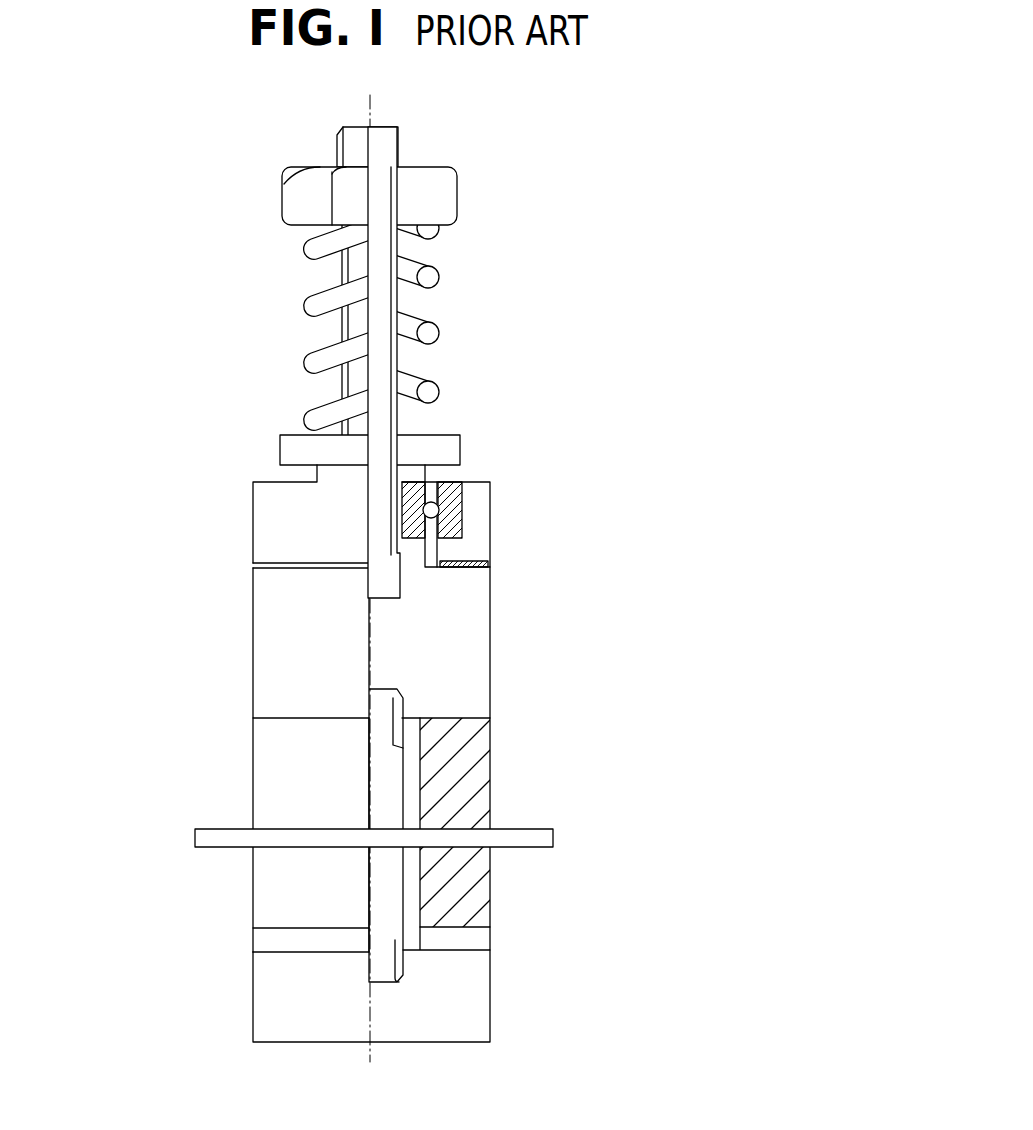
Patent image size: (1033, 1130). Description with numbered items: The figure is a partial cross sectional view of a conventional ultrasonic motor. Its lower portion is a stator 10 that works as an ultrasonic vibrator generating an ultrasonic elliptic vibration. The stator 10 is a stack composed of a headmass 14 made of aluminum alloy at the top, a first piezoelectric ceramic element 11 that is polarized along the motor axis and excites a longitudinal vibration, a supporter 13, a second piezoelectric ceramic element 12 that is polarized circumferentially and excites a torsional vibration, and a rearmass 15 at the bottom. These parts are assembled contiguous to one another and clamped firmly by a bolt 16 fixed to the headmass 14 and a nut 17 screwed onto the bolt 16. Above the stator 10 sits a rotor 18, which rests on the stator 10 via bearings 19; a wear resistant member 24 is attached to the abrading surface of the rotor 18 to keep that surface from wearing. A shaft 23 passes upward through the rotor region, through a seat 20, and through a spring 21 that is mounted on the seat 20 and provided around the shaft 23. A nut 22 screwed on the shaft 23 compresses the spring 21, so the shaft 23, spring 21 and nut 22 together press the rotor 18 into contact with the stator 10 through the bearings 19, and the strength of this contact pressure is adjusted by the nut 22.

The stator 10 is at (169, 566).
The first piezoelectric ceramic element 11 is at (492, 762).
The second piezoelectric ceramic element 12 is at (492, 908).
The supporter 13 is at (554, 834).
The headmass 14 is at (492, 655).
The rearmass 15 is at (492, 940).
The bolt 16 is at (403, 870).
The nut 17 is at (492, 998).
The rotor 18 is at (492, 530).
The bearings 19 is at (440, 508).
The seat 20 is at (462, 444).
The spring 21 is at (442, 333).
The nut 22 is at (460, 197).
The shaft 23 is at (398, 133).
The wear resistant member 24 is at (492, 562).